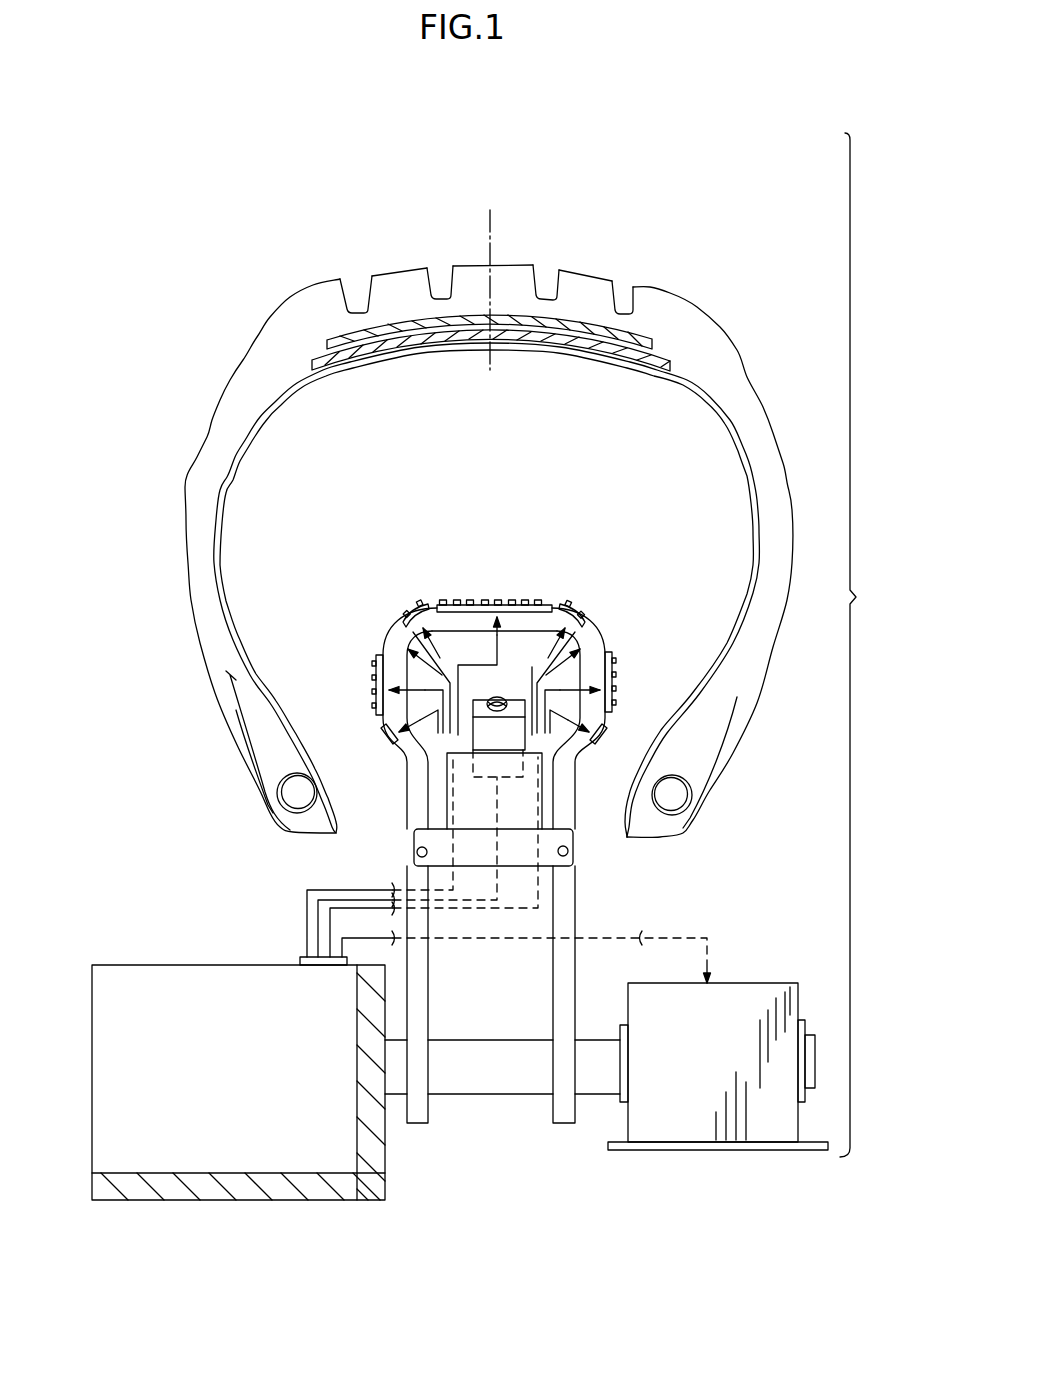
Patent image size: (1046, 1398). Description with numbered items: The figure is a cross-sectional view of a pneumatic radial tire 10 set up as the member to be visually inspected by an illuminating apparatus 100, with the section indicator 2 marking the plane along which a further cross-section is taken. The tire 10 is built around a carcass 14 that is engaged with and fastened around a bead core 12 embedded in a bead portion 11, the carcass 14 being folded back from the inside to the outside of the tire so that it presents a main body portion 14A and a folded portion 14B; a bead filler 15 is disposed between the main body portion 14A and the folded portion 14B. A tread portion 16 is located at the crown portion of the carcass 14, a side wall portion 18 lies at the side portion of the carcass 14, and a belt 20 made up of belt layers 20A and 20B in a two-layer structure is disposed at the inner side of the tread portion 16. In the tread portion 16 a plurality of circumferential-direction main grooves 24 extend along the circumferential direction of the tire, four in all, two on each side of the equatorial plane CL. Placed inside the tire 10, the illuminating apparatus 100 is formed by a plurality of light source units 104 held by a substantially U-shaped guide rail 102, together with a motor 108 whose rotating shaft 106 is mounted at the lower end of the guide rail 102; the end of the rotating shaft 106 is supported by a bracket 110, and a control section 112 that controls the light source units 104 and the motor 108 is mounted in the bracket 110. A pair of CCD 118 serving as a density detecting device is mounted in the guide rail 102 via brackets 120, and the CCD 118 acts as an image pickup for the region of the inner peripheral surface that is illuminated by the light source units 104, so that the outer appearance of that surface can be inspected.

The section line of FIG. 2 is at (490, 185).
The equatorial plane CL is at (493, 247).
The pneumatic radial tire 10 is at (647, 219).
The bead portion 11 is at (229, 741).
The bead core 12 is at (290, 799).
The carcass 14 is at (418, 750).
The main body portion 14A is at (229, 676).
The folded portion 14B is at (236, 711).
The bead filler 15 is at (285, 753).
The tread portion 16 is at (405, 265).
The side wall portion 18 is at (190, 570).
The belt 20 is at (571, 321).
The belt layer 20A is at (671, 372).
The belt layer 20B is at (653, 352).
The circumferential-direction main groove 24 is at (350, 292).
The illuminating apparatus 100 is at (567, 587).
The guide rail 102 is at (469, 624).
The light source unit 104 is at (437, 602).
The rotating shaft 106 is at (512, 1087).
The motor 108 is at (713, 1133).
The bracket 110 is at (352, 1193).
The control section 112 is at (210, 975).
The CCD 118 is at (508, 698).
The bracket 120 is at (547, 813).